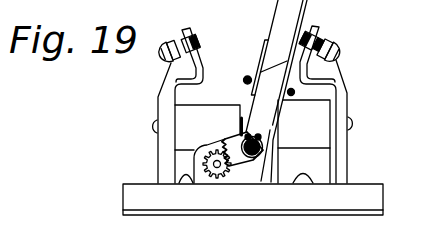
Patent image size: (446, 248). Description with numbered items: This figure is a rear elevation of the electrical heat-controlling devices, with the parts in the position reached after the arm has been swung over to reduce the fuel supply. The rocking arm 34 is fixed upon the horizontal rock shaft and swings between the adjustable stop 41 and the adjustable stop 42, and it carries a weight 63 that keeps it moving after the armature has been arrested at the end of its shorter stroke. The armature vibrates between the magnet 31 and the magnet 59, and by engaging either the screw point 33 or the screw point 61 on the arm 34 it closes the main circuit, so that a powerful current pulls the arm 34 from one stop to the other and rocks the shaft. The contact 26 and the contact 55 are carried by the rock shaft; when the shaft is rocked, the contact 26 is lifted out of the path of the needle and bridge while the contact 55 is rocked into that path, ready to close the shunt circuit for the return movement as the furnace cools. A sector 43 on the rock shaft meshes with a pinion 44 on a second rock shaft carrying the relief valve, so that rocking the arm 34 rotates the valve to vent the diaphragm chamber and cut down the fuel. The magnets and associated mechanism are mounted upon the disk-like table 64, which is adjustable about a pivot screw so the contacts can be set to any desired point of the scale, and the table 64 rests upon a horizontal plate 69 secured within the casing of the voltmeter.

The contact 26 is at (223, 145).
The magnet 31 is at (304, 141).
The screw point 33 is at (295, 92).
The rocking arm 34 is at (268, 127).
The adjustable stop 41 is at (201, 38).
The adjustable stop 42 is at (337, 41).
The sector 43 is at (247, 172).
The pinion 44 is at (216, 174).
The contact 55 is at (270, 170).
The magnet 59 is at (208, 127).
The screw point 61 is at (243, 80).
The weight 63 is at (284, 36).
The table 64 is at (384, 193).
The horizontal plate 69 is at (188, 216).